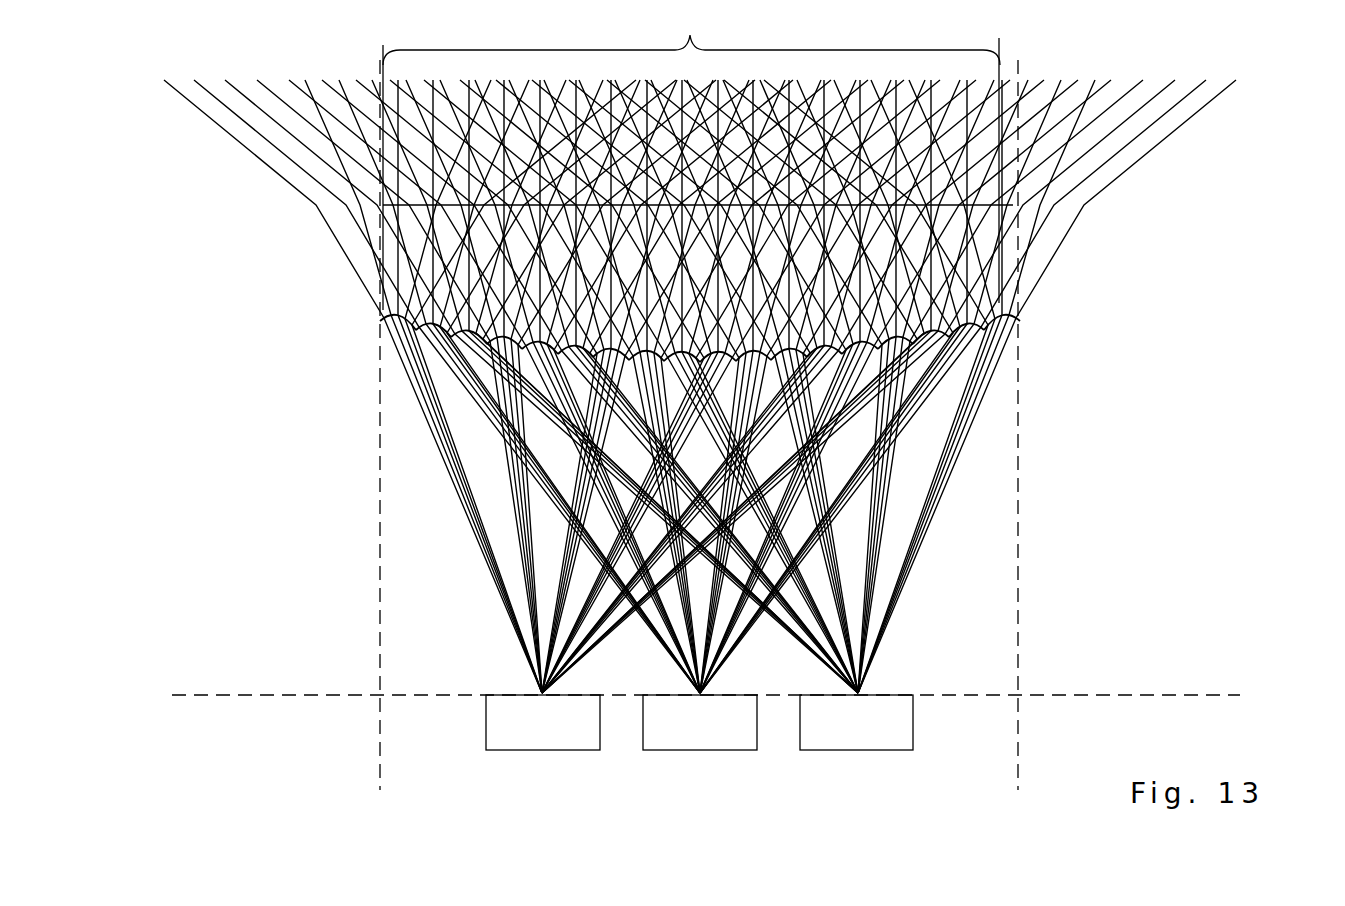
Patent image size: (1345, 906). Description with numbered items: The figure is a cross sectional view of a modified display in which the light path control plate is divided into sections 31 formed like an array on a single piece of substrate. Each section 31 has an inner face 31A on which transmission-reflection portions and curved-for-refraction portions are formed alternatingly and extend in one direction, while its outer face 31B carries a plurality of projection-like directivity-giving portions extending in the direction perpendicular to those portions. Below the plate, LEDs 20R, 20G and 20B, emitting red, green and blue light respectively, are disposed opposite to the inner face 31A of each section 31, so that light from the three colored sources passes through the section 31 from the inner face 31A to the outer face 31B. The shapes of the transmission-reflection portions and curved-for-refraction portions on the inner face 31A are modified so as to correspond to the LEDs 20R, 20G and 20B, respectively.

The section 31 is at (770, 184).
The inner face 31A is at (1013, 320).
The outer face 31B is at (1026, 183).
The LED emitting R-light 20R is at (486, 740).
The LED emitting G-light 20G is at (745, 695).
The LED emitting B-light 20B is at (913, 733).